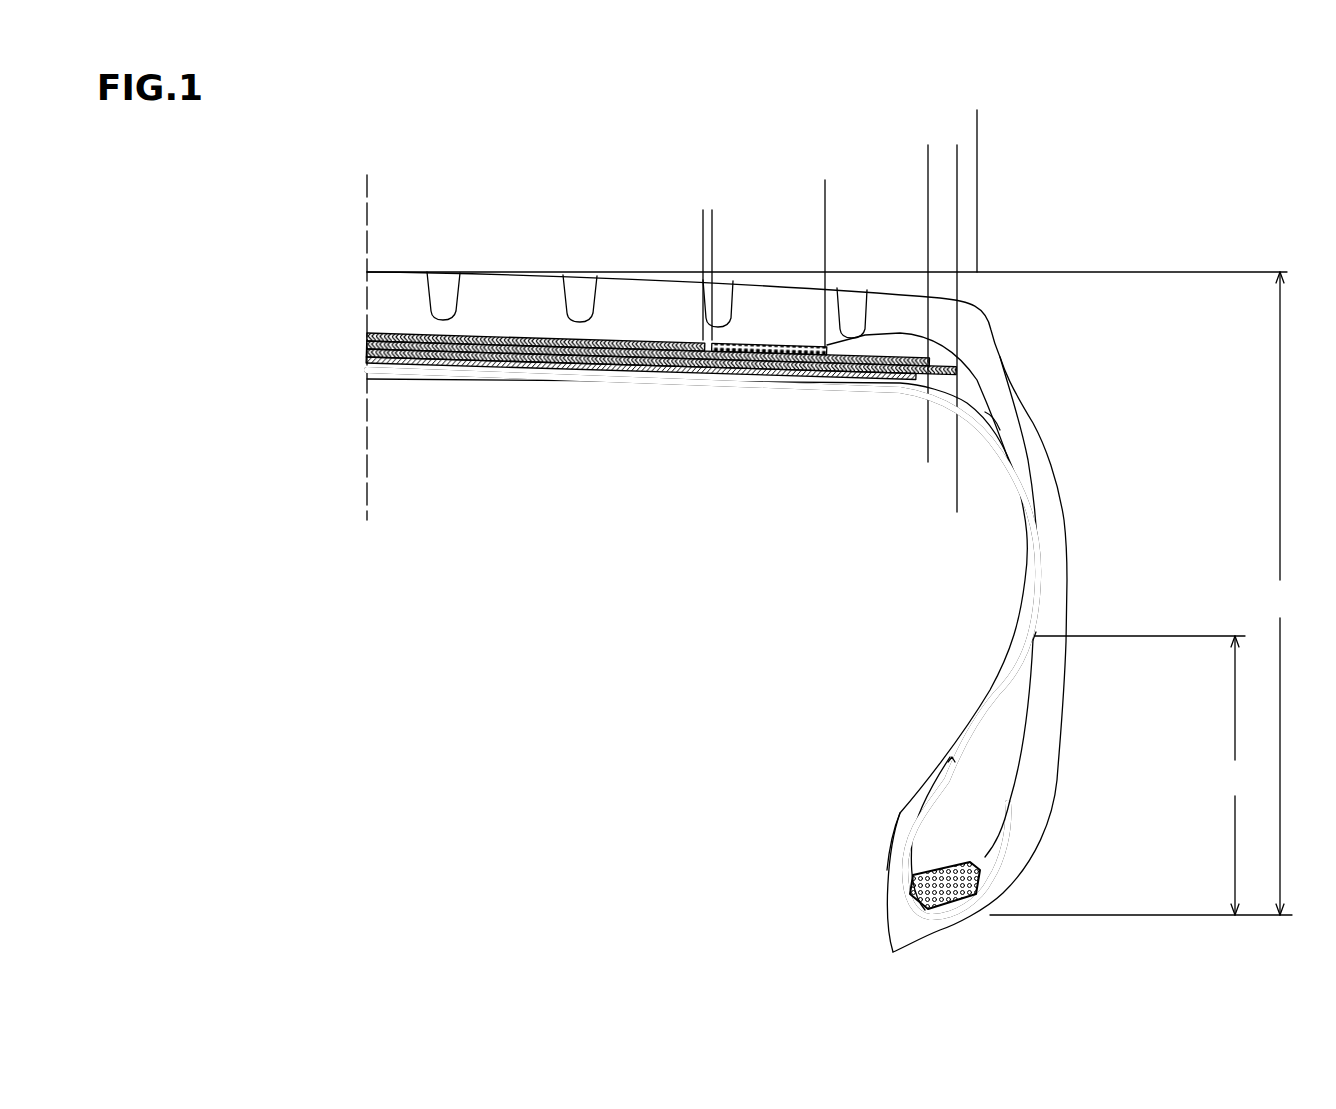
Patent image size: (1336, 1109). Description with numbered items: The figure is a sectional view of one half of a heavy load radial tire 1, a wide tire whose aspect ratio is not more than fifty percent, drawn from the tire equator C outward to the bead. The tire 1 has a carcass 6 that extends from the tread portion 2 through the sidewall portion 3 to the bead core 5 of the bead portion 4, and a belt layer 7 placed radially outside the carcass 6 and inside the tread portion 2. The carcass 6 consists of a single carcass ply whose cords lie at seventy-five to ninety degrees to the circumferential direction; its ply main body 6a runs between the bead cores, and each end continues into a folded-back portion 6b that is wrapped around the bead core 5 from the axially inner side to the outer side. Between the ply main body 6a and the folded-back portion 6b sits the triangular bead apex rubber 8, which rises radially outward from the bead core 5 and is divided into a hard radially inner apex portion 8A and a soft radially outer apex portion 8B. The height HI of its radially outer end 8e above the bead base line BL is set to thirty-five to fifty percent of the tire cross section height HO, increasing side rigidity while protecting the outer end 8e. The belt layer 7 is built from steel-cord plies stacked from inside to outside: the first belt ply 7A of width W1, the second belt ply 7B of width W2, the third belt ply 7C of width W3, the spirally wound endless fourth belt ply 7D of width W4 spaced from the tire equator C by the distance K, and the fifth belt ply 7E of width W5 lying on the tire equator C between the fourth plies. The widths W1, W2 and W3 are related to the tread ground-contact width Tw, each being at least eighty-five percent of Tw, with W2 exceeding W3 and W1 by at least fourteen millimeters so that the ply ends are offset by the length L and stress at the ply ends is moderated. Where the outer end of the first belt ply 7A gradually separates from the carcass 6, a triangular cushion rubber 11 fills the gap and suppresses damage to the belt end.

The heavy load radial tire 1 is at (1108, 240).
The tread portion 2 is at (500, 290).
The sidewall portion 3 is at (1098, 530).
The bead portion 4 is at (880, 887).
The bead core 5 is at (955, 902).
The carcass 6 is at (702, 643).
The ply main body 6a is at (980, 732).
The folded-back portion 6b is at (983, 837).
The belt layer 7 is at (617, 315).
The first belt ply 7A is at (595, 395).
The second belt ply 7B is at (368, 352).
The third belt ply 7C is at (368, 345).
The fourth belt ply 7D is at (757, 340).
The fifth belt ply 7E is at (370, 333).
The bead apex rubber 8 is at (1077, 748).
The apex portion 8A is at (952, 807).
The apex portion 8B is at (1020, 706).
The radially outer end 8e is at (1054, 622).
The cushion rubber 11 is at (980, 418).
The tire equator C is at (368, 480).
The bead base line BL is at (1112, 918).
The tire cross section height HO is at (834, 593).
The height of the radially outer end of the bead apex rubber HI is at (1142, 775).
The tread ground-contact width Tw is at (977, 117).
The ply width of the first belt ply W1 is at (928, 457).
The ply width of the second belt ply W2 is at (957, 507).
The ply width of the third belt ply W3 is at (928, 152).
The ply width of the fourth belt ply W4 is at (825, 217).
The ply width of the fifth belt ply W5 is at (703, 217).
The distance between the tire equator and the outer end of the fourth belt ply K is at (367, 187).
The length L is at (992, 152).